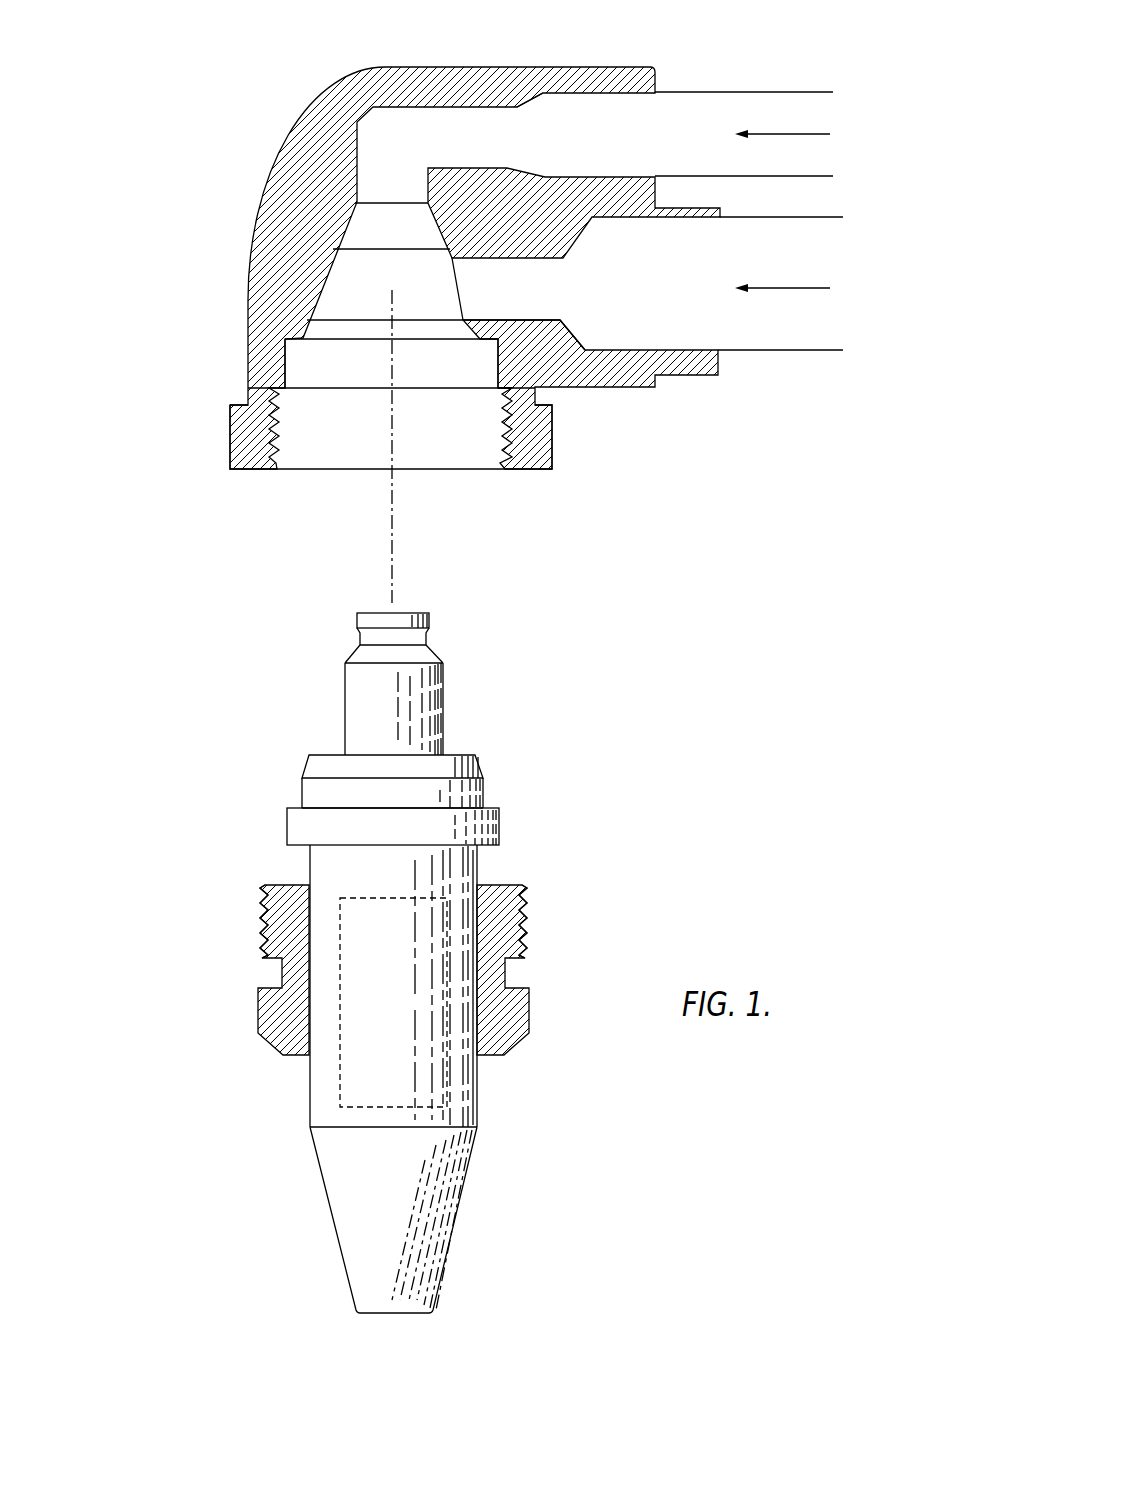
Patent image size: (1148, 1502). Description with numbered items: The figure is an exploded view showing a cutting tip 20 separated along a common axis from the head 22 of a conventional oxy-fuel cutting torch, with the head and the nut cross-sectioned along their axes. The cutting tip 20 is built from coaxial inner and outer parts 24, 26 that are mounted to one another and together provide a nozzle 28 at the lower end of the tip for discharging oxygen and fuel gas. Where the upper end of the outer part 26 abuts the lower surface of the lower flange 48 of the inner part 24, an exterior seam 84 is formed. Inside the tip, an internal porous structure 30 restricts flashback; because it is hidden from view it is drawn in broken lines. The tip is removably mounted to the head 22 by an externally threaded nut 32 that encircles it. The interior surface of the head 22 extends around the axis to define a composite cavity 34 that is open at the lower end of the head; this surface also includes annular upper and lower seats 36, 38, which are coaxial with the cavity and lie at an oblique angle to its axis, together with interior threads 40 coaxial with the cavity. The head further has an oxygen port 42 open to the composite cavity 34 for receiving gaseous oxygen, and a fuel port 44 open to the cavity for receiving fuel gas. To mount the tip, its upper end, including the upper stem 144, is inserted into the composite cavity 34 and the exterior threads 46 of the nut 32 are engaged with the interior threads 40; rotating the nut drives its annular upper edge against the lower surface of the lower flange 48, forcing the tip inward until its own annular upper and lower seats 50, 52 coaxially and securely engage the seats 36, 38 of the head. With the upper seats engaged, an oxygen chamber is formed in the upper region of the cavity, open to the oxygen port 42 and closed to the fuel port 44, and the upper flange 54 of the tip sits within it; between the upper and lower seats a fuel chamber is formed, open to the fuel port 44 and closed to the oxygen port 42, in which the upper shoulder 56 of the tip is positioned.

The cutting tip 20 is at (277, 1243).
The head 22 is at (488, 67).
The inner part 24 is at (447, 690).
The outer part 26 is at (480, 1112).
The nozzle 28 is at (357, 1307).
The porous structure 30 is at (342, 1090).
The nut 32 is at (260, 998).
The composite cavity 34 is at (360, 461).
The upper seat 36 is at (350, 239).
The lower seat 38 is at (321, 333).
The interior threads 40 is at (278, 452).
The oxygen port 42 is at (578, 135).
The fuel port 44 is at (545, 287).
The exterior threads 46 is at (262, 947).
The lower flange 48 is at (287, 830).
The upper seat 50 is at (345, 654).
The lower seat 52 is at (305, 766).
The upper flange 54 is at (432, 623).
The upper shoulder 56 is at (462, 757).
The exterior seam 84 is at (480, 849).
The upper stem 144 is at (343, 734).